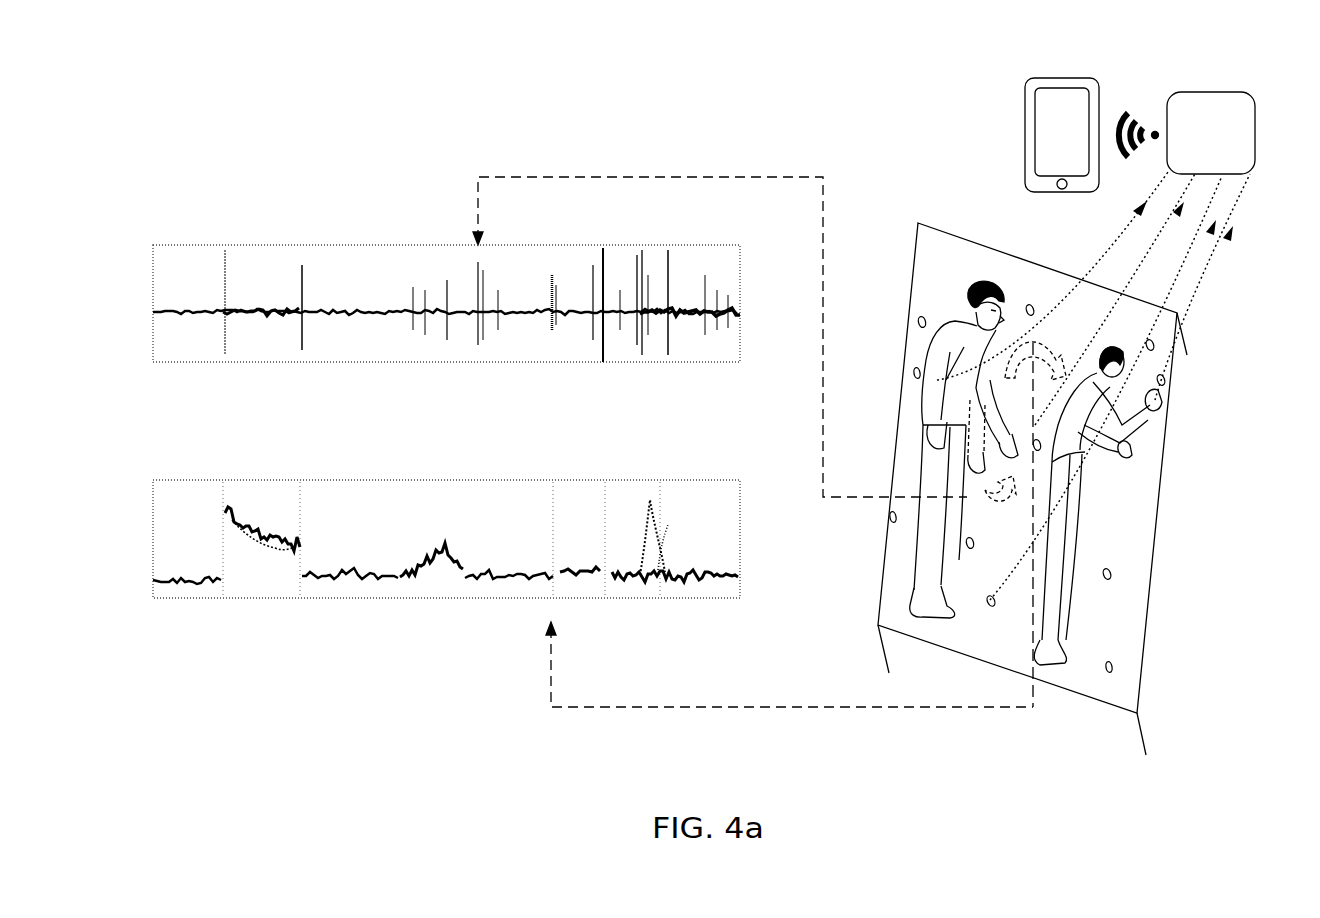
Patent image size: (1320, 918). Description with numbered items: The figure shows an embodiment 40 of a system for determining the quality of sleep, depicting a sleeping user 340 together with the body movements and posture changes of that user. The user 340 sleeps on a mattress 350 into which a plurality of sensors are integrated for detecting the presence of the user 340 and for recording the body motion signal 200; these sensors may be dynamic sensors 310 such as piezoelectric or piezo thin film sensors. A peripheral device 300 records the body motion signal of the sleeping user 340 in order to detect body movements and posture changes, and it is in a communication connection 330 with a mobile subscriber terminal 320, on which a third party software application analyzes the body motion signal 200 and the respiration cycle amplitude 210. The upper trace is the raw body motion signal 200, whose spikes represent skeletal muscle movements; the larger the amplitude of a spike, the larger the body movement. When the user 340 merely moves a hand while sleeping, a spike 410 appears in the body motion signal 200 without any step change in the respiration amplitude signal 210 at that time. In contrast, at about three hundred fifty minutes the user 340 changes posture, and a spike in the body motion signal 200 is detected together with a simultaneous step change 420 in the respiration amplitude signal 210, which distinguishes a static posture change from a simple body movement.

The embodiment 40 is at (451, 760).
The body motion signal 200 is at (381, 174).
The spike 410 is at (487, 300).
The respiration cycle amplitude 210 is at (172, 602).
The step change 420 is at (650, 588).
The mattress 350 is at (878, 587).
The dynamic sensors 310 is at (1115, 667).
The sleeping user 340 is at (953, 315).
The peripheral device 300 is at (1213, 90).
The mobile subscriber terminal 320 is at (1025, 135).
The communication connection 330 is at (1130, 108).